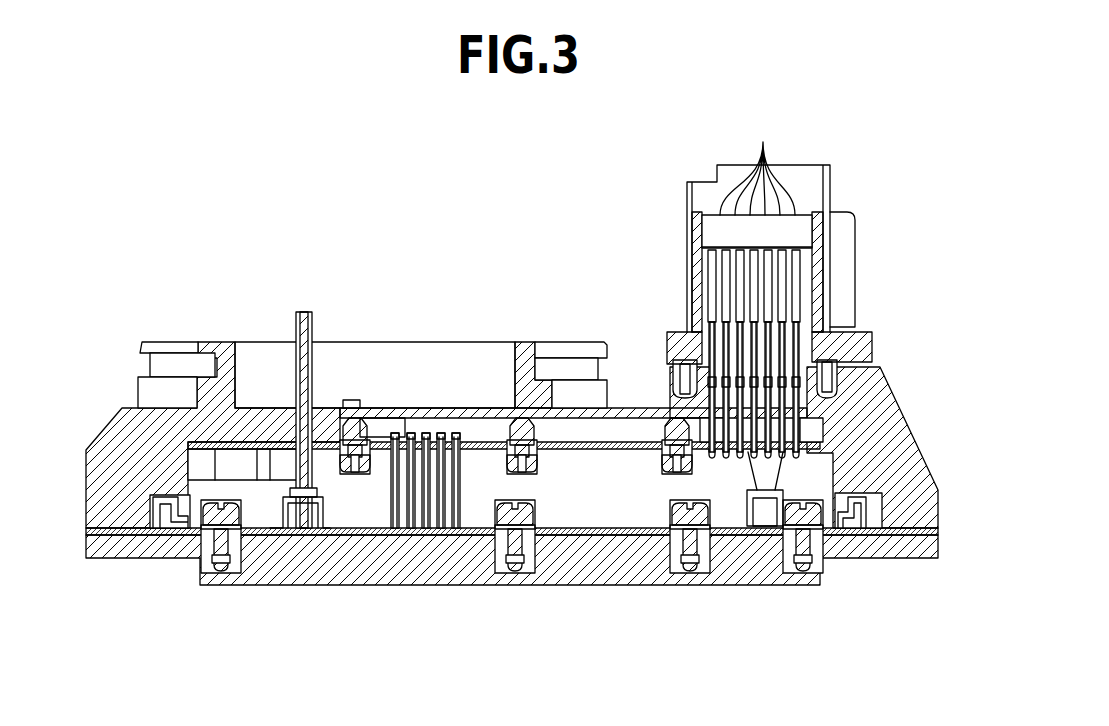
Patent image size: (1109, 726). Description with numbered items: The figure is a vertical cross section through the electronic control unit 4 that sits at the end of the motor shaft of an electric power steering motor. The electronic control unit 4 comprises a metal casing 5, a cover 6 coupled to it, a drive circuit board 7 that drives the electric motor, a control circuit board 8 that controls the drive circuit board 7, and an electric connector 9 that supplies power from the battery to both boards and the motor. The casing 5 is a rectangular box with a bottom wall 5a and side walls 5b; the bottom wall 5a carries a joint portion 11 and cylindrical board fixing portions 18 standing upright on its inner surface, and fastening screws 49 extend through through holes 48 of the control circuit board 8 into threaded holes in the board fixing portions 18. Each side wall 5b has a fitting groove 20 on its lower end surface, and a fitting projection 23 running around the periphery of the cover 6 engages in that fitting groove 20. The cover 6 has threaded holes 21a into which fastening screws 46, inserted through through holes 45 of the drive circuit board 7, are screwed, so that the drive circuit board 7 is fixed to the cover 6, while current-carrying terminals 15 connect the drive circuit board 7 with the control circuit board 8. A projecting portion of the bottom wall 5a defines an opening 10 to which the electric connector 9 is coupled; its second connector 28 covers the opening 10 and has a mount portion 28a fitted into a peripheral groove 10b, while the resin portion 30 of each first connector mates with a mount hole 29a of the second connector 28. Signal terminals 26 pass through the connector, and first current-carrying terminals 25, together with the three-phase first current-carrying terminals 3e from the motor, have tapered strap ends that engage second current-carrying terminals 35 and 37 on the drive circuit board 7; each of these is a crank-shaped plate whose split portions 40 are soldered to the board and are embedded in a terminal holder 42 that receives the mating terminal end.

The first current-carrying terminal 3e is at (298, 322).
The electronic control unit 4 is at (434, 297).
The casing 5 is at (912, 408).
The bottom wall 5a is at (250, 350).
The side wall 5b is at (100, 483).
The cover 6 is at (578, 597).
The drive circuit board 7 is at (300, 550).
The control circuit board 8 is at (629, 584).
The electric connector 9 is at (868, 226).
The opening 10 is at (848, 353).
The peripheral groove 10b is at (833, 381).
The joint portion 11 is at (207, 347).
The current-carrying terminal 15 is at (395, 535).
The board fixing portion 18 is at (546, 433).
The fitting groove 20 is at (153, 510).
The threaded hole 21a is at (215, 565).
The fitting projection 23 is at (167, 505).
The first current-carrying terminal 25 is at (835, 460).
The signal terminal 26 is at (757, 165).
The second connector 28 is at (698, 280).
The mount portion 28a is at (687, 380).
The mount hole 29a is at (808, 292).
The resin portion 30 is at (710, 308).
The second current-carrying terminal 35 is at (730, 518).
The second current-carrying terminal 37 is at (262, 518).
The split portion 40 is at (278, 537).
The terminal holder 42 is at (748, 524).
The through hole 45 is at (228, 587).
The fastening screw 46 is at (238, 507).
The through hole 48 is at (353, 433).
The fastening screw 49 is at (358, 473).